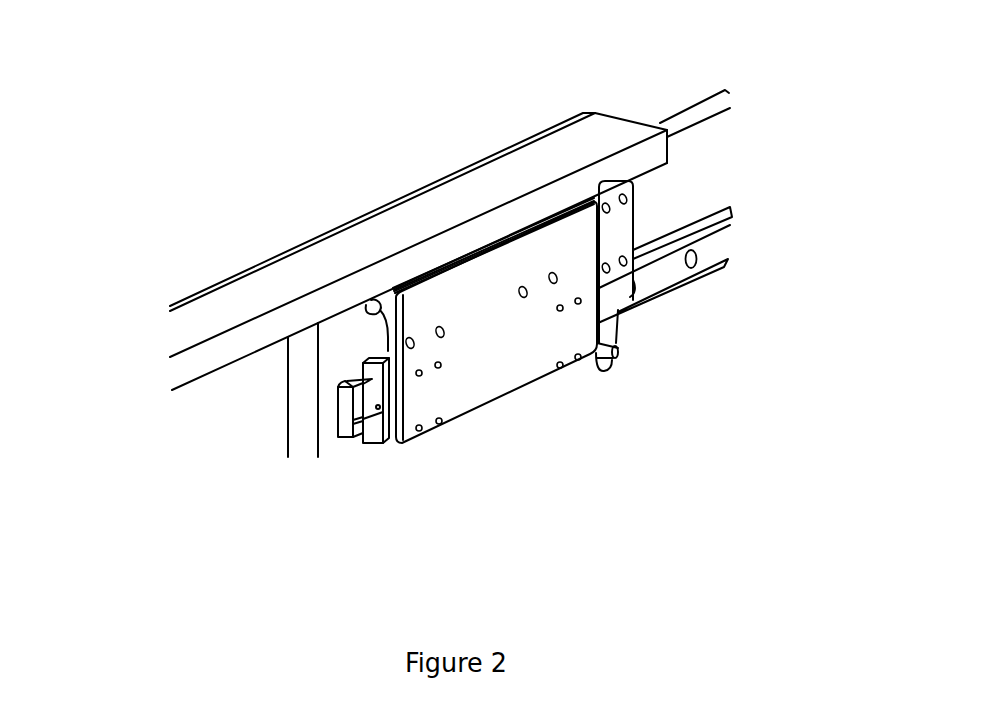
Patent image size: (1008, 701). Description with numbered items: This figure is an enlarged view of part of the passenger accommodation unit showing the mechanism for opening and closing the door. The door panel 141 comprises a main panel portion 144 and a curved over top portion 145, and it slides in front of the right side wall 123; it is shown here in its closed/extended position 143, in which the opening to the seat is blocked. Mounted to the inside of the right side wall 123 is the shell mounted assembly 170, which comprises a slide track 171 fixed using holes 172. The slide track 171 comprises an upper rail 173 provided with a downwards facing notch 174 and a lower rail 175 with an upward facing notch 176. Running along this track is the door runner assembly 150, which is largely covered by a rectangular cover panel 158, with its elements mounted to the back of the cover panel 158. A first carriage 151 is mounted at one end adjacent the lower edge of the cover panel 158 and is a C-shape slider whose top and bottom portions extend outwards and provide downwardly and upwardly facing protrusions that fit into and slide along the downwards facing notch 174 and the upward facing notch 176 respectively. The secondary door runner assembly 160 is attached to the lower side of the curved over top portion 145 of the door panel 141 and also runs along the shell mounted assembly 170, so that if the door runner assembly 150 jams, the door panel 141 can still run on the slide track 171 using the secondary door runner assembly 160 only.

The right side wall 123 is at (697, 115).
The door panel 141 is at (180, 446).
The closed/extended position 143 is at (204, 445).
The main panel portion 144 is at (195, 398).
The curved over top portion 145 is at (351, 274).
The door runner assembly 150 is at (514, 369).
The first carriage 151 is at (380, 452).
The cover panel 158 is at (460, 395).
The secondary door runner assembly 160 is at (628, 336).
The shell mounted assembly 170 is at (747, 244).
The slide track 171 is at (725, 209).
The holes 172 is at (691, 250).
The upper rail 173 is at (731, 212).
The downwards facing notch 174 is at (354, 386).
The lower rail 175 is at (728, 262).
The upward facing notch 176 is at (345, 437).